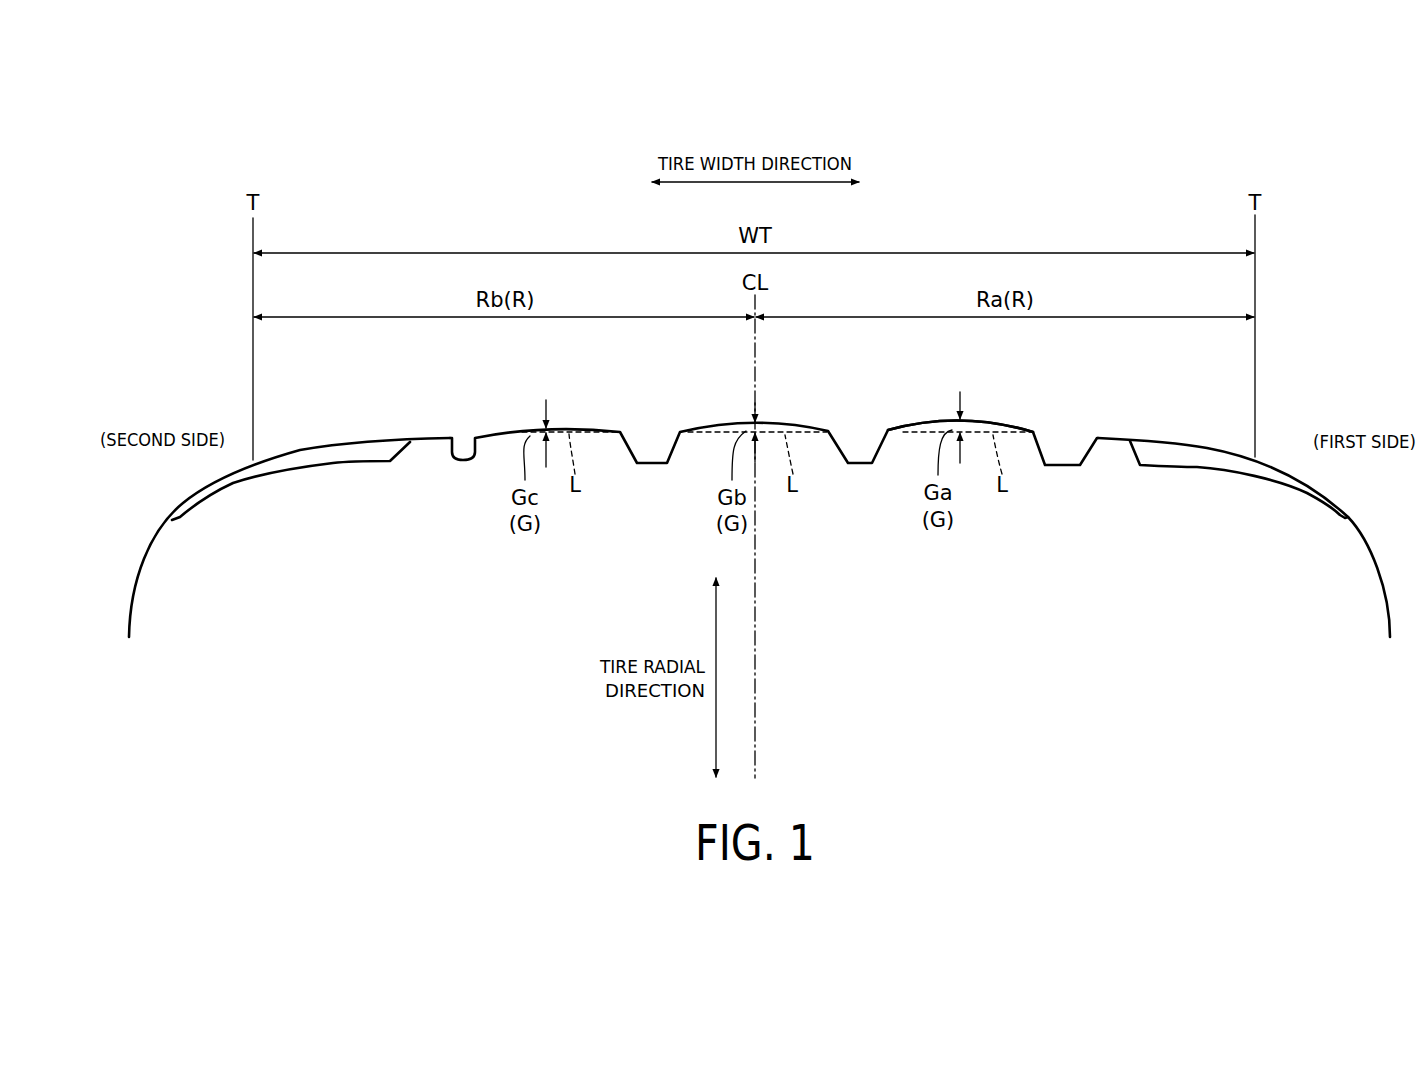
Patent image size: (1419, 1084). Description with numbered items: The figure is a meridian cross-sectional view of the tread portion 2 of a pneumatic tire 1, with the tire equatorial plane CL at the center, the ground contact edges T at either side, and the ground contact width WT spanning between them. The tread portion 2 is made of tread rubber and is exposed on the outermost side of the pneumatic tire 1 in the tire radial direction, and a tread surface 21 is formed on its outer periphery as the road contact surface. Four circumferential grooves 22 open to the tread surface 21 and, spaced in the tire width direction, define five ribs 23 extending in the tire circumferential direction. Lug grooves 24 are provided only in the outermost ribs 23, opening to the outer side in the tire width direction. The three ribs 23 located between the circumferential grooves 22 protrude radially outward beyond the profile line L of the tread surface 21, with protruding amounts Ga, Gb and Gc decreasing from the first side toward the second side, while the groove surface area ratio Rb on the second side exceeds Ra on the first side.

The pneumatic tire 1 is at (1093, 219).
The tread portion 2 is at (902, 447).
The tread surface 21 is at (991, 417).
The circumferential groove 22 is at (467, 445).
The rib 23 is at (366, 443).
The lug groove 24 is at (330, 462).